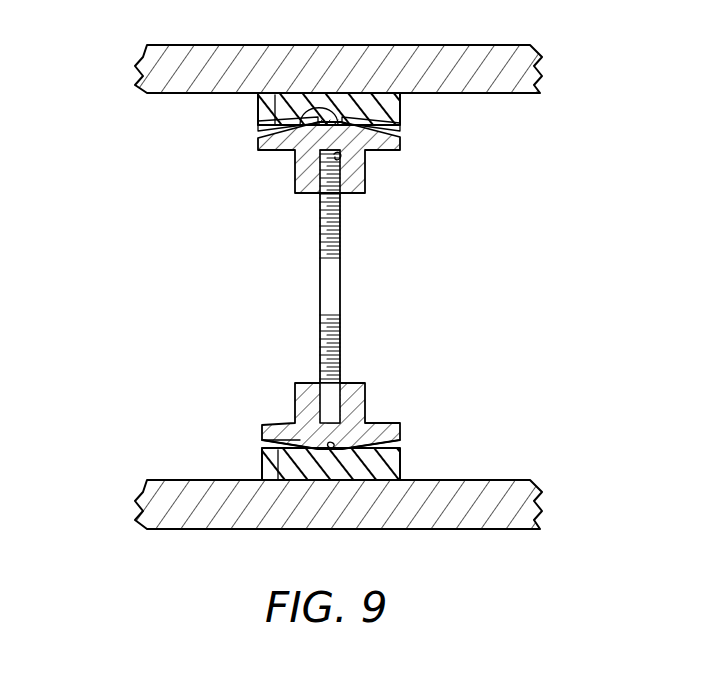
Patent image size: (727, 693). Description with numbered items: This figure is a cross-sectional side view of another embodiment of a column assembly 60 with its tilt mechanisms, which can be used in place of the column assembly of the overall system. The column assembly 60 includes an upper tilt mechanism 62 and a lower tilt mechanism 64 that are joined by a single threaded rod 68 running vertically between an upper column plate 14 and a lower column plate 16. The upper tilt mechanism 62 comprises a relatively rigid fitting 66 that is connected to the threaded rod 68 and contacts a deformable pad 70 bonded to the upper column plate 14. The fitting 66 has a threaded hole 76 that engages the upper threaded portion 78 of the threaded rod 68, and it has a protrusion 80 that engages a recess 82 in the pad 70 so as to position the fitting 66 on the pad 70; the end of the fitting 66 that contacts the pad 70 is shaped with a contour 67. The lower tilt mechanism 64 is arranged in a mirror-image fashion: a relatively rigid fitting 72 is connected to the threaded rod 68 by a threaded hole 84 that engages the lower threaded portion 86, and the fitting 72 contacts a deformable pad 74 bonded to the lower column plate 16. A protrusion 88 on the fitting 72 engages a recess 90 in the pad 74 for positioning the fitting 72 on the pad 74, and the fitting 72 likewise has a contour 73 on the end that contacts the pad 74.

The upper column plate 14 is at (190, 45).
The lower column plate 16 is at (478, 532).
The column assembly 60 is at (492, 336).
The upper tilt mechanism 62 is at (135, 184).
The lower tilt mechanism 64 is at (122, 422).
The fitting 66 is at (258, 140).
The contour 67 is at (262, 121).
The threaded rod 68 is at (331, 288).
The deformable pad 70 is at (400, 100).
The fitting 72 is at (296, 392).
The contour 73 is at (384, 440).
The deformable pad 74 is at (401, 458).
The threaded hole 76 is at (340, 158).
The upper threaded portion 78 is at (320, 240).
The protrusion 80 is at (400, 122).
The recess 82 is at (262, 103).
The threaded hole 84 is at (333, 414).
The lower threaded portion 86 is at (342, 333).
The protrusion 88 is at (263, 450).
The recess 90 is at (263, 470).